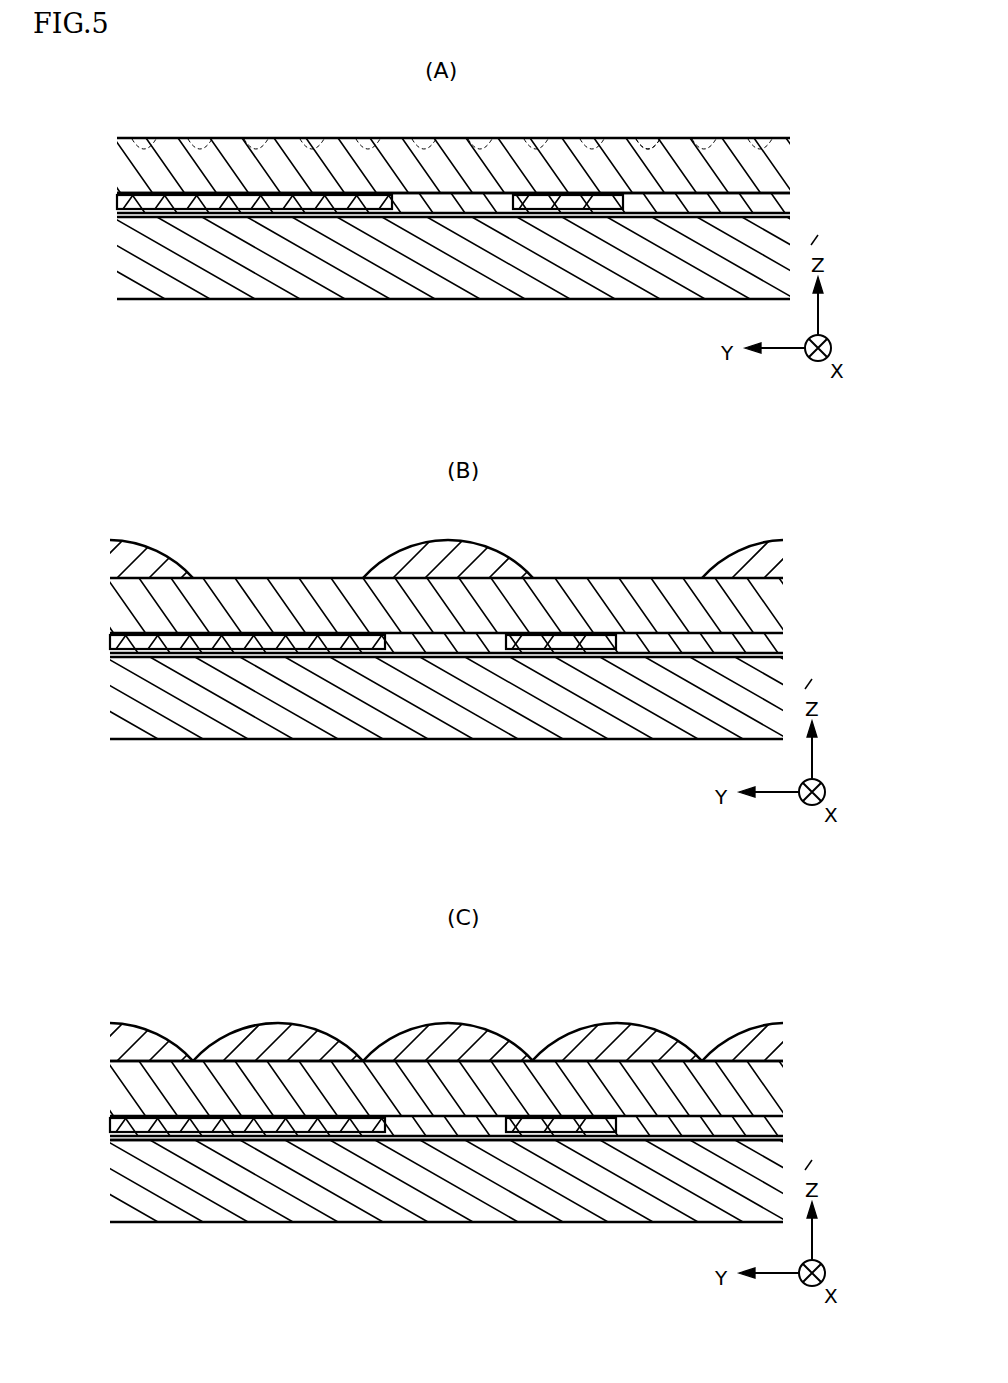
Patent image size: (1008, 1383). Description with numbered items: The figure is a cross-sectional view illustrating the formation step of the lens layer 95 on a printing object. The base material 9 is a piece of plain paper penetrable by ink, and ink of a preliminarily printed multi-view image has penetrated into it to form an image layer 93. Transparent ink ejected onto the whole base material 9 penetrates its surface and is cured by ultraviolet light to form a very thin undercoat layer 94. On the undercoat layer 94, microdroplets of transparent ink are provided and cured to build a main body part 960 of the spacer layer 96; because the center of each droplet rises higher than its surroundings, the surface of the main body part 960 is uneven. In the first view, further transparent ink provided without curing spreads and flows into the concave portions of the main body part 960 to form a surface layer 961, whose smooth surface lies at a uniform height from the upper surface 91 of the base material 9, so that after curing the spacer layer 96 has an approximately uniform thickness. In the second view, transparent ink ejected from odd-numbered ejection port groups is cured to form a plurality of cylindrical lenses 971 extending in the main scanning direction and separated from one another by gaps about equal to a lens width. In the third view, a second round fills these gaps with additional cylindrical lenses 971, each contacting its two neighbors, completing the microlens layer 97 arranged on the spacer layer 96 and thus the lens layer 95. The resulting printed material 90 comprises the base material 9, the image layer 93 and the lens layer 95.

The base material 9 is at (363, 270).
The printed material 90 is at (160, 485).
The upper surface 91 is at (472, 190).
The image layer 93 is at (177, 210).
The undercoat layer 94 is at (459, 206).
The lens layer 95 is at (692, 948).
The spacer layer 96 is at (393, 153).
The main body part 960 is at (628, 162).
The surface layer 961 is at (202, 147).
The microlens layer 97 is at (547, 973).
The cylindrical lens 971 is at (453, 557).